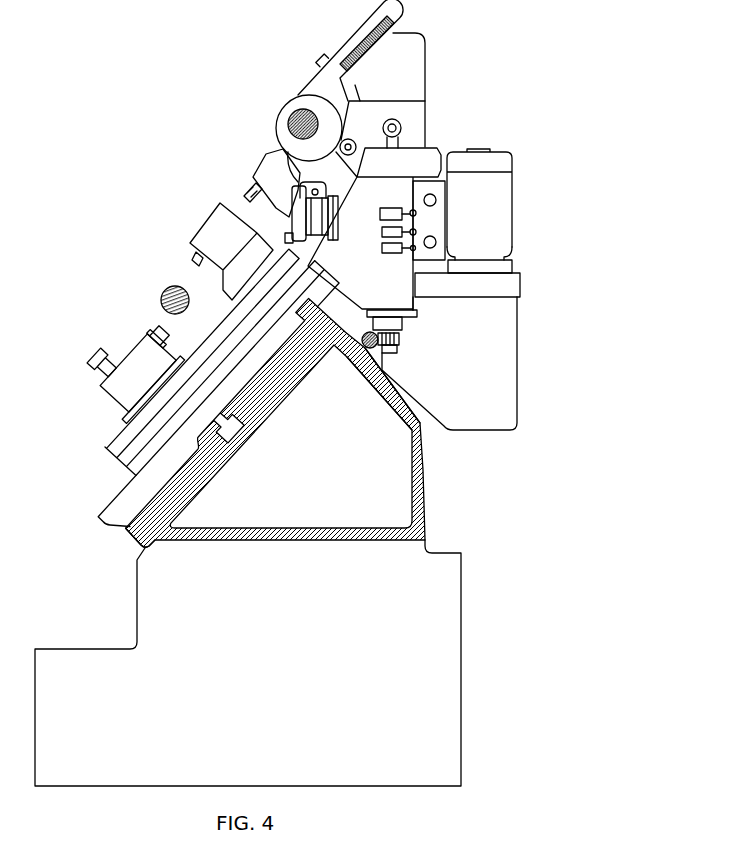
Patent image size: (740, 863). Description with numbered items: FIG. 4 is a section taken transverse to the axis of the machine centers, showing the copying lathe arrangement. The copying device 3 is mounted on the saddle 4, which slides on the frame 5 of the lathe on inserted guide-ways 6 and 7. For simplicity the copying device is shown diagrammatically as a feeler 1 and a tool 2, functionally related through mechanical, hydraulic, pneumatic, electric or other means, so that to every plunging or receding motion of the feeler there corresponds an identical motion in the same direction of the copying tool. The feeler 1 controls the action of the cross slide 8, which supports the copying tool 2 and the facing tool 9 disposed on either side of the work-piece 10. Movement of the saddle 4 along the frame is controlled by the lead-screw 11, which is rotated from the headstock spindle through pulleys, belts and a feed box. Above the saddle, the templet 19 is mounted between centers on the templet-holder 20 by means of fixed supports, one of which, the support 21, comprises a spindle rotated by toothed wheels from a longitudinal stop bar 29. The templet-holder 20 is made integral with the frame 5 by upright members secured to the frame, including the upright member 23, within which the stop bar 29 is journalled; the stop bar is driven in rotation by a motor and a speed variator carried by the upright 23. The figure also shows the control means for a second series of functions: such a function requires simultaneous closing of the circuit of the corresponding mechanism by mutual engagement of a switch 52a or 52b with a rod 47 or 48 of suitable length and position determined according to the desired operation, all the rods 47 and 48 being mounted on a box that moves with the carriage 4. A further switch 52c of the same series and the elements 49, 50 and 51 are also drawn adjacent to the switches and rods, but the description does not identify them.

The feeler 1 is at (282, 159).
The copying tool 2 is at (148, 338).
The copying device 3 is at (512, 355).
The saddle 4 is at (150, 484).
The frame of the lathe 5 is at (418, 466).
The guide-way 6 is at (332, 347).
The guide-way 7 is at (125, 540).
The cross slide 8 is at (124, 457).
The facing tool 9 is at (193, 258).
The work-piece 10 is at (162, 299).
The lead-screw 11 is at (362, 372).
The templet 19 is at (298, 107).
The templet-holder 20 is at (366, 54).
The fixed support 21 is at (374, 41).
The upright member 23 is at (425, 70).
The longitudinal stop bar 29 is at (401, 128).
The rod 47 is at (420, 215).
The rod 48 is at (420, 232).
The valve block 49 is at (439, 194).
The port 50 is at (436, 201).
The port 51 is at (436, 242).
The switch 52a is at (380, 213).
The switch 52b is at (382, 231).
The connector 52c is at (382, 248).